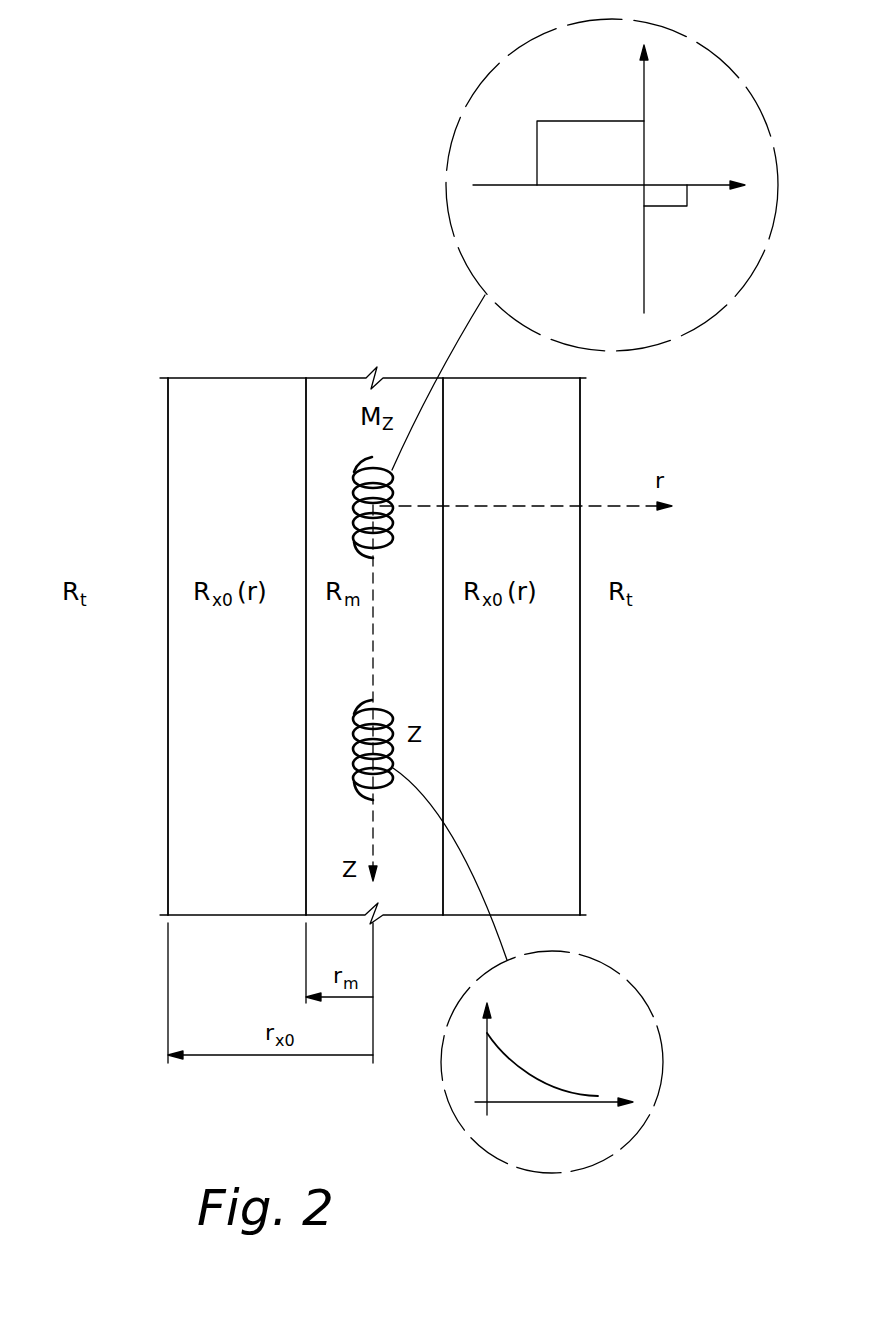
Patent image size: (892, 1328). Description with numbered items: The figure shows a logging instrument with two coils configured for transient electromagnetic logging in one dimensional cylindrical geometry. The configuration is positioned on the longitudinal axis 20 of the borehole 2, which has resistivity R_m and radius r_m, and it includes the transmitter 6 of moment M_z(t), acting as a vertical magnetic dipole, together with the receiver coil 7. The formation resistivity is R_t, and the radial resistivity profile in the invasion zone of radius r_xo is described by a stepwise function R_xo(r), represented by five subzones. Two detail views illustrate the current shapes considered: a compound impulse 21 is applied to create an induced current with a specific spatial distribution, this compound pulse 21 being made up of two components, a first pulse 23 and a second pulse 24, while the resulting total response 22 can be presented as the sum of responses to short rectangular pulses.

The borehole 2 is at (333, 348).
The transmitter 6 is at (360, 462).
The receiver coil 7 is at (360, 700).
The longitudinal axis 20 is at (371, 822).
The compound impulse 21 is at (583, 218).
The total response 22 is at (518, 1063).
The first pulse 23 is at (537, 155).
The second pulse 24 is at (667, 207).